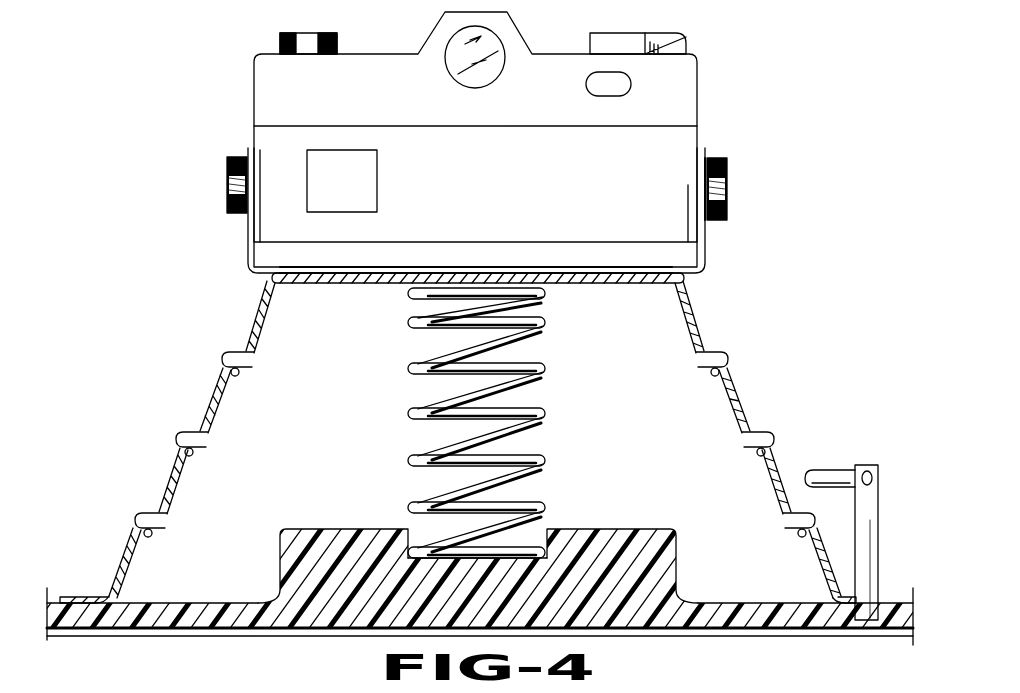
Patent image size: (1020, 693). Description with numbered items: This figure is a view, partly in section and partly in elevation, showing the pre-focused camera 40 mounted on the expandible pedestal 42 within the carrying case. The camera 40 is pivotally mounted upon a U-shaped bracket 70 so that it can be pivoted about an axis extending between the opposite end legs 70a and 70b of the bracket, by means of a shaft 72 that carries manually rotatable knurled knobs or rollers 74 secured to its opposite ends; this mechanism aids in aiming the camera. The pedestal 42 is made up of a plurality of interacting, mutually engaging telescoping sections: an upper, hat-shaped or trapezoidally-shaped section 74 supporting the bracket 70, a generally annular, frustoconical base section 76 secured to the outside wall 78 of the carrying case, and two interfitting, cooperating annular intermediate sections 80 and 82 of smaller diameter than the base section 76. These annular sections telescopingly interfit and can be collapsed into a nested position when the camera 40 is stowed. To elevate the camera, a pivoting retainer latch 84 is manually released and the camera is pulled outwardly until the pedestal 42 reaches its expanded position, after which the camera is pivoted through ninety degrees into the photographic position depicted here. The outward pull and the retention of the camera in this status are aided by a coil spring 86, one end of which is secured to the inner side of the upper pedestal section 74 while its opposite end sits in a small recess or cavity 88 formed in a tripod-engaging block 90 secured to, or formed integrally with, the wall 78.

The pre-focused camera 40 is at (492, 197).
The expandible pedestal 42 is at (458, 477).
The U-shaped bracket 70 is at (476, 223).
The end leg of bracket 70a is at (250, 147).
The end leg of bracket 70b is at (706, 147).
The shaft 72 is at (707, 196).
The knurled knobs or rollers; upper hat-shaped pedestal section 74 is at (238, 185).
The base section 76 is at (128, 558).
The outside wall 78 is at (700, 612).
The intermediate section 80 is at (176, 480).
The intermediate section 82 is at (221, 392).
The pivoting retainer latch 84 is at (864, 466).
The coil spring 86 is at (549, 405).
The recess or cavity 88 is at (556, 512).
The tripod-engaging block 90 is at (306, 532).